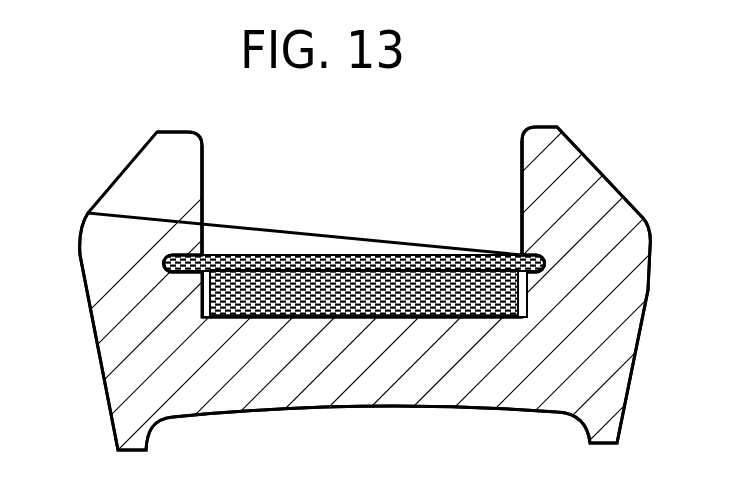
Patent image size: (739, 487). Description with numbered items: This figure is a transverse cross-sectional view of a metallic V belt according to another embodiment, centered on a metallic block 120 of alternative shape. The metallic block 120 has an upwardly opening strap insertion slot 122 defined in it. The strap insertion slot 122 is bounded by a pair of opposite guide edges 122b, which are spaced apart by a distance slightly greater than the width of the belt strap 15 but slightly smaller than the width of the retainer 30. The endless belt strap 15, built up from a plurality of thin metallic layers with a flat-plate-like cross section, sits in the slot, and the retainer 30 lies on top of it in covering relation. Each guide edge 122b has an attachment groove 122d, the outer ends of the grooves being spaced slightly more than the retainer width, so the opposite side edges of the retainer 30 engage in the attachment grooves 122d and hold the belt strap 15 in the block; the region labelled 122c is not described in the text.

The metallic block 120 is at (600, 160).
The strap insertion slot 122 is at (393, 162).
The guide edges 122b is at (203, 198).
The bottom wall 122c is at (438, 313).
The attachment grooves 122d is at (178, 283).
The retainer 30 is at (312, 255).
The belt strap 15 is at (372, 313).